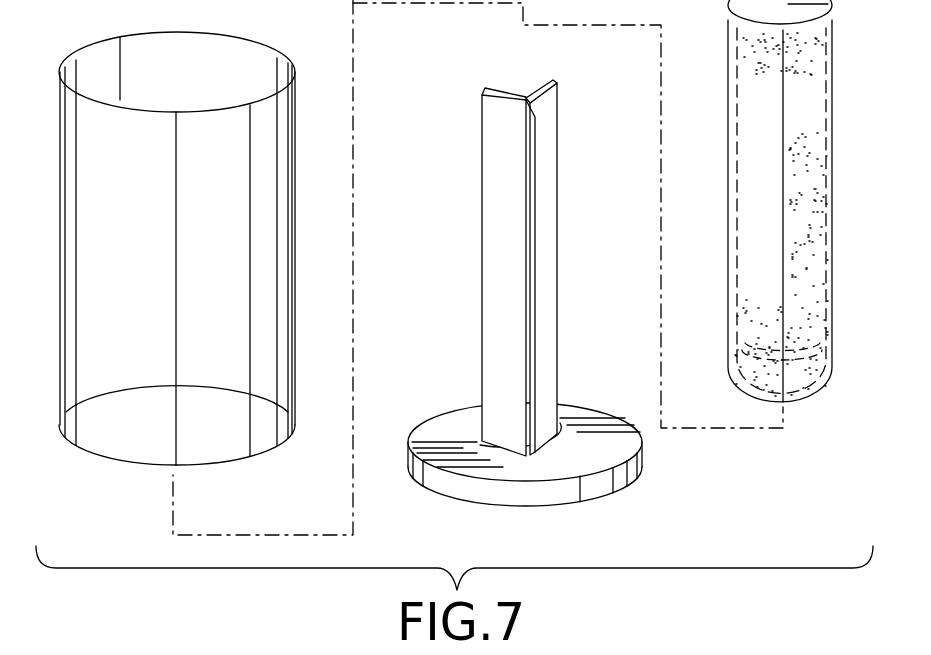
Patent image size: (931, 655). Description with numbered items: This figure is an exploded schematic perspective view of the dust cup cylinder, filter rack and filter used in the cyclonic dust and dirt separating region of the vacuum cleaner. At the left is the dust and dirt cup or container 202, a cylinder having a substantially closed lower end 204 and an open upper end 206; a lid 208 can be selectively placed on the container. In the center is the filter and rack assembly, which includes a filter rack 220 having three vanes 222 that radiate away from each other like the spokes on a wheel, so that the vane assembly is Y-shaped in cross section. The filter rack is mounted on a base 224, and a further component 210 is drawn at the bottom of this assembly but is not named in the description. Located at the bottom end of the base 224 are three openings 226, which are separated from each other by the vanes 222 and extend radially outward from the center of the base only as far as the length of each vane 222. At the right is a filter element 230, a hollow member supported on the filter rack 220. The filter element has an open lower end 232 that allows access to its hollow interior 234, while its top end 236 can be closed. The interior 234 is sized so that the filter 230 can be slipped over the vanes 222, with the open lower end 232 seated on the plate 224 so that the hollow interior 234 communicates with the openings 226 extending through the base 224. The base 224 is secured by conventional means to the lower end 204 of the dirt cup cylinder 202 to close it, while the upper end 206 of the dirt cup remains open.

The dust and dirt cup or container 202 is at (201, 254).
The lower end 204 is at (200, 433).
The open upper end 206 is at (270, 58).
The lid 208 is at (705, 654).
The base 210 is at (513, 456).
The filter rack 220 is at (519, 268).
The vanes 222 is at (497, 292).
The base 224 is at (462, 418).
The openings 226 is at (572, 419).
The filter element 230 is at (753, 203).
The open lower end 232 is at (760, 400).
The hollow interior 234 is at (773, 118).
The closed top end 236 is at (757, 8).